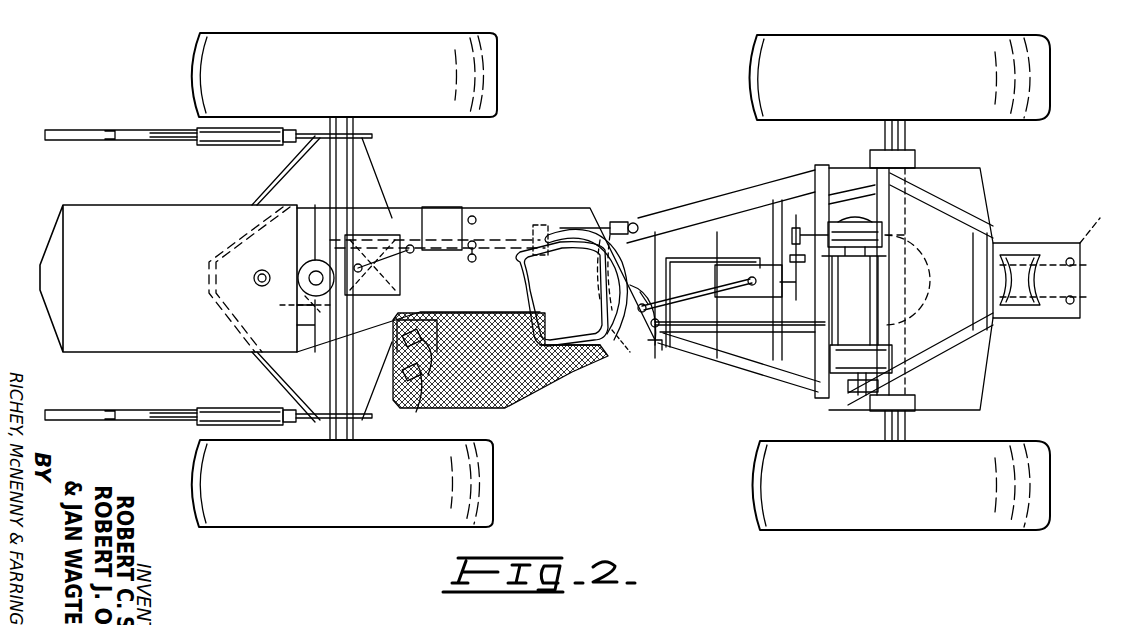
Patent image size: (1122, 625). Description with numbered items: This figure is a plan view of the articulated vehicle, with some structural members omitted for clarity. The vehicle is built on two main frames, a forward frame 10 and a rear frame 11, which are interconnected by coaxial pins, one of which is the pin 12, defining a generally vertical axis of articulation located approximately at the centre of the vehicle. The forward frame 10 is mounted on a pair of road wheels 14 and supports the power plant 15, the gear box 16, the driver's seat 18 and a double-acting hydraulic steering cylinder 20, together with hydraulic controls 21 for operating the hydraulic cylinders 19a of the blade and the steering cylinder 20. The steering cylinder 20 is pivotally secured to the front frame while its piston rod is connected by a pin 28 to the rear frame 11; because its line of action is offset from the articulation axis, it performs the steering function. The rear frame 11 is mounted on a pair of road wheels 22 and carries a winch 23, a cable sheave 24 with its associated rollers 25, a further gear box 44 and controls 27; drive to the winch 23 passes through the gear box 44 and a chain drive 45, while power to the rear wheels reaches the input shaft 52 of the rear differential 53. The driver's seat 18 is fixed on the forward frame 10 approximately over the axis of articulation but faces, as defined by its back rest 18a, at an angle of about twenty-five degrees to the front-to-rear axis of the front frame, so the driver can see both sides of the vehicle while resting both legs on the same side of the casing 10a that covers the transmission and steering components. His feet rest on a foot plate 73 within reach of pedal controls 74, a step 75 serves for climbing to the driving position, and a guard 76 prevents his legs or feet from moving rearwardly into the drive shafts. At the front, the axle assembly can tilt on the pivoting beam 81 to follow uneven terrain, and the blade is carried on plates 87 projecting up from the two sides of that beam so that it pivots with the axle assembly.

The forward frame 10 is at (255, 377).
The casing 10a is at (440, 268).
The rear frame 11 is at (1010, 354).
The coaxial pin 12 is at (605, 235).
The road wheels 14 is at (200, 70).
The power plant 15 is at (118, 210).
The gear box 16 is at (388, 232).
The driver's seat 18 is at (518, 292).
The back rest 18a is at (578, 228).
The hydraulic cylinders 19a is at (212, 138).
The hydraulic steering cylinder 20 is at (515, 240).
The hydraulic controls 21 is at (475, 256).
The road wheels 22 is at (745, 95).
The winch 23 is at (840, 345).
The cable sheave 24 is at (1018, 258).
The rollers 25 is at (1056, 254).
The controls 27 is at (727, 308).
The pin 28 is at (638, 224).
The gear box 44 is at (740, 265).
The chain drive 45 is at (800, 235).
The input shaft 52 is at (291, 288).
The rear differential 53 is at (925, 310).
The foot plate 73 is at (508, 408).
The pedal controls 74 is at (422, 380).
The step 75 is at (578, 366).
The guard 76 is at (628, 353).
The pivoting beam 81 is at (282, 170).
The plates 87 is at (322, 142).